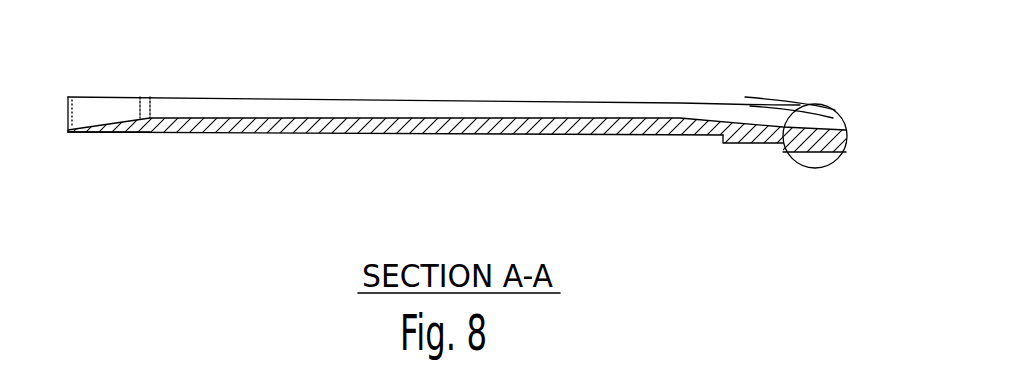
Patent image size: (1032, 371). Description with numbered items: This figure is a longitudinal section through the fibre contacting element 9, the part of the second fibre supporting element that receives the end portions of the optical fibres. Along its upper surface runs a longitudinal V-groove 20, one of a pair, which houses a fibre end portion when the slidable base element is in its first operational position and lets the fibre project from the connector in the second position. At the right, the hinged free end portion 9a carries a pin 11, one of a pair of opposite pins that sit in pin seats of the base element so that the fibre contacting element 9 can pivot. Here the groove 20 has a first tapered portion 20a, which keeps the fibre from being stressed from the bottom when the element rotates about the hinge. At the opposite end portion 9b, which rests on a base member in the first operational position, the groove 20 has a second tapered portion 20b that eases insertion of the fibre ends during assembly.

The fibre contacting element 9 is at (505, 133).
The free end portion of the fibre contacting element 9a is at (787, 168).
The end portion of the fibre contacting element 9b is at (97, 152).
The pin 11 is at (845, 123).
The longitudinal V-groove 20 is at (453, 113).
The first tapered portion 20a is at (798, 112).
The second tapered portion 20b is at (112, 105).